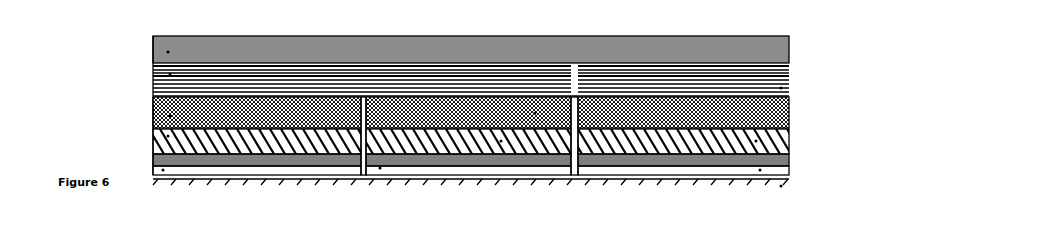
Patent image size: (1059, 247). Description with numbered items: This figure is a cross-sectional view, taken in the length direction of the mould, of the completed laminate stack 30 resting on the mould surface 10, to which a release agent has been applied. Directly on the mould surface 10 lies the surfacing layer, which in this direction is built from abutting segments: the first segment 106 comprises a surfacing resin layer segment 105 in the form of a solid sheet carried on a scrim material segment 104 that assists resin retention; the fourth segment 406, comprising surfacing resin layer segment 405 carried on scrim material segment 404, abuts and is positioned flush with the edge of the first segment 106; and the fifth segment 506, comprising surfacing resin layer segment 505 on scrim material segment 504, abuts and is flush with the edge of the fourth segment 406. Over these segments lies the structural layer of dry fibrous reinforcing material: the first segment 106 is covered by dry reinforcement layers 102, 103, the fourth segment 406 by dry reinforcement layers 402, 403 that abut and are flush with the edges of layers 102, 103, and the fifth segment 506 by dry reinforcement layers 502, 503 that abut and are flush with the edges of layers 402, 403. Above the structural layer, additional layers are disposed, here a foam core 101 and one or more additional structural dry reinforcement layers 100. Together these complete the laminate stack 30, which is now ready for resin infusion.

The mould surface 10 is at (774, 179).
The laminate stack 30 is at (88, 52).
The additional structural dry reinforcement layers 100 is at (146, 31).
The foam core 101 is at (146, 52).
The dry reinforcement layer 102 is at (146, 76).
The dry reinforcement layer 103 is at (146, 97).
The scrim material segment 104 is at (146, 122).
The surfacing resin layer segment 105 is at (146, 145).
The first segment 106 is at (88, 98).
The dry reinforcement layer 402 is at (527, 106).
The dry reinforcement layer 403 is at (496, 130).
The scrim material segment 404 is at (397, 160).
The surfacing resin layer segment 405 is at (373, 161).
The fourth segment 406 is at (458, 180).
The dry reinforcement layer 502 is at (772, 81).
The dry reinforcement layer 503 is at (752, 134).
The scrim material segment 504 is at (784, 146).
The surfacing resin layer segment 505 is at (753, 162).
The fifth segment 506 is at (826, 137).